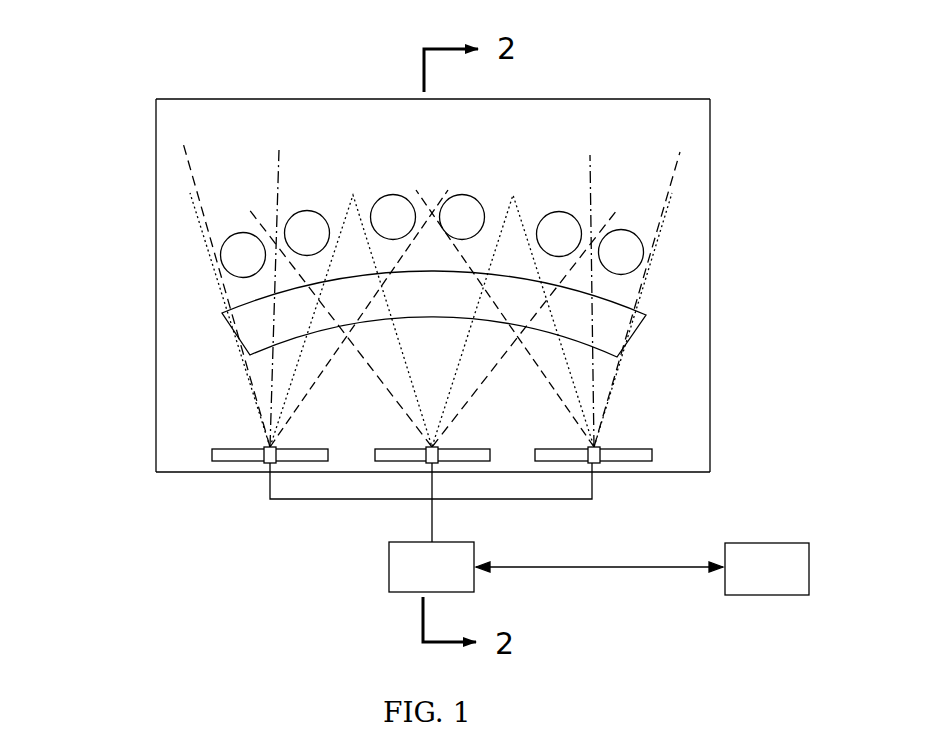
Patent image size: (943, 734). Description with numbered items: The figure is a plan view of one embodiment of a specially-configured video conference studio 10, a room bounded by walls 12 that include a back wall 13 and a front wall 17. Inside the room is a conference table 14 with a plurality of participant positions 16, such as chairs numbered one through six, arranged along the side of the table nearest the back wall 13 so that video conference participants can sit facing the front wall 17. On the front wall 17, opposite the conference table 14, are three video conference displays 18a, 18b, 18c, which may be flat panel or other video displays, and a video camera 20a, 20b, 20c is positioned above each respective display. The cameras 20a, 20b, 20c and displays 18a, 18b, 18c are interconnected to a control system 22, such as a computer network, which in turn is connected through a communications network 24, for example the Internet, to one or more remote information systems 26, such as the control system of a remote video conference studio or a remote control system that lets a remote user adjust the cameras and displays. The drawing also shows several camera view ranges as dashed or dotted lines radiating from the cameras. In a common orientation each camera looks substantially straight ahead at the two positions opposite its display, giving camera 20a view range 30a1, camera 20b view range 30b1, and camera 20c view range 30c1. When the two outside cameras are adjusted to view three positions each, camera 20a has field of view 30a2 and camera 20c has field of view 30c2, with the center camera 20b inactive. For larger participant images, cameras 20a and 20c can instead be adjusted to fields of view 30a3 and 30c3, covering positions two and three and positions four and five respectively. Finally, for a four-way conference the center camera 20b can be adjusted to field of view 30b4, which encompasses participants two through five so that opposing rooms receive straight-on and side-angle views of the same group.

The video conference studio 10 is at (139, 72).
The walls 12 is at (710, 385).
The back wall 13 is at (546, 98).
The conference table 14 is at (441, 302).
The participant positions 16 is at (464, 194).
The front wall 17 is at (173, 473).
The video conference display 18a is at (248, 456).
The video conference display 18b is at (475, 460).
The video conference display 18c is at (637, 455).
The video camera 20a is at (270, 463).
The video camera 20b is at (430, 463).
The video camera 20c is at (598, 464).
The control system 22 is at (444, 578).
The communications network 24 is at (561, 565).
The remote information system 26 is at (779, 580).
The camera view range 30a1 is at (205, 244).
The field of view 30a2 is at (192, 178).
The field of view 30a3 is at (275, 172).
The camera view range 30b1 is at (408, 370).
The field of view 30b4 is at (472, 397).
The camera view range 30c1 is at (665, 237).
The field of view 30c2 is at (672, 182).
The field of view 30c3 is at (592, 190).